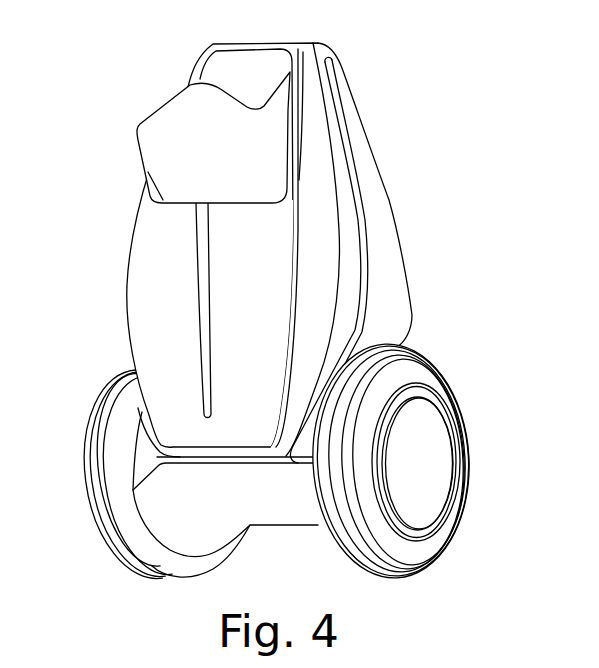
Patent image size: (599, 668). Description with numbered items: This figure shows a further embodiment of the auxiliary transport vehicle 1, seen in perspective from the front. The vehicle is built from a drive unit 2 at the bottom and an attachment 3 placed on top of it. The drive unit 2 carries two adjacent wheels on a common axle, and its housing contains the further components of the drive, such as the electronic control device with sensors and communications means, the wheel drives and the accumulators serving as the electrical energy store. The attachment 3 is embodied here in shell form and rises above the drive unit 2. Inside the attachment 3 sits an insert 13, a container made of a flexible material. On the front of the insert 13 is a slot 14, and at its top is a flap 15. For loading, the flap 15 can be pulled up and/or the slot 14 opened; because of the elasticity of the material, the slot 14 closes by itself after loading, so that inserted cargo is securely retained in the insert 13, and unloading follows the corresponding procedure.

The auxiliary transport vehicle 1 is at (286, 308).
The drive unit 2 is at (475, 404).
The attachment 3 is at (367, 159).
The insert 13 is at (134, 298).
The slot 14 is at (203, 290).
The flap 15 is at (153, 122).